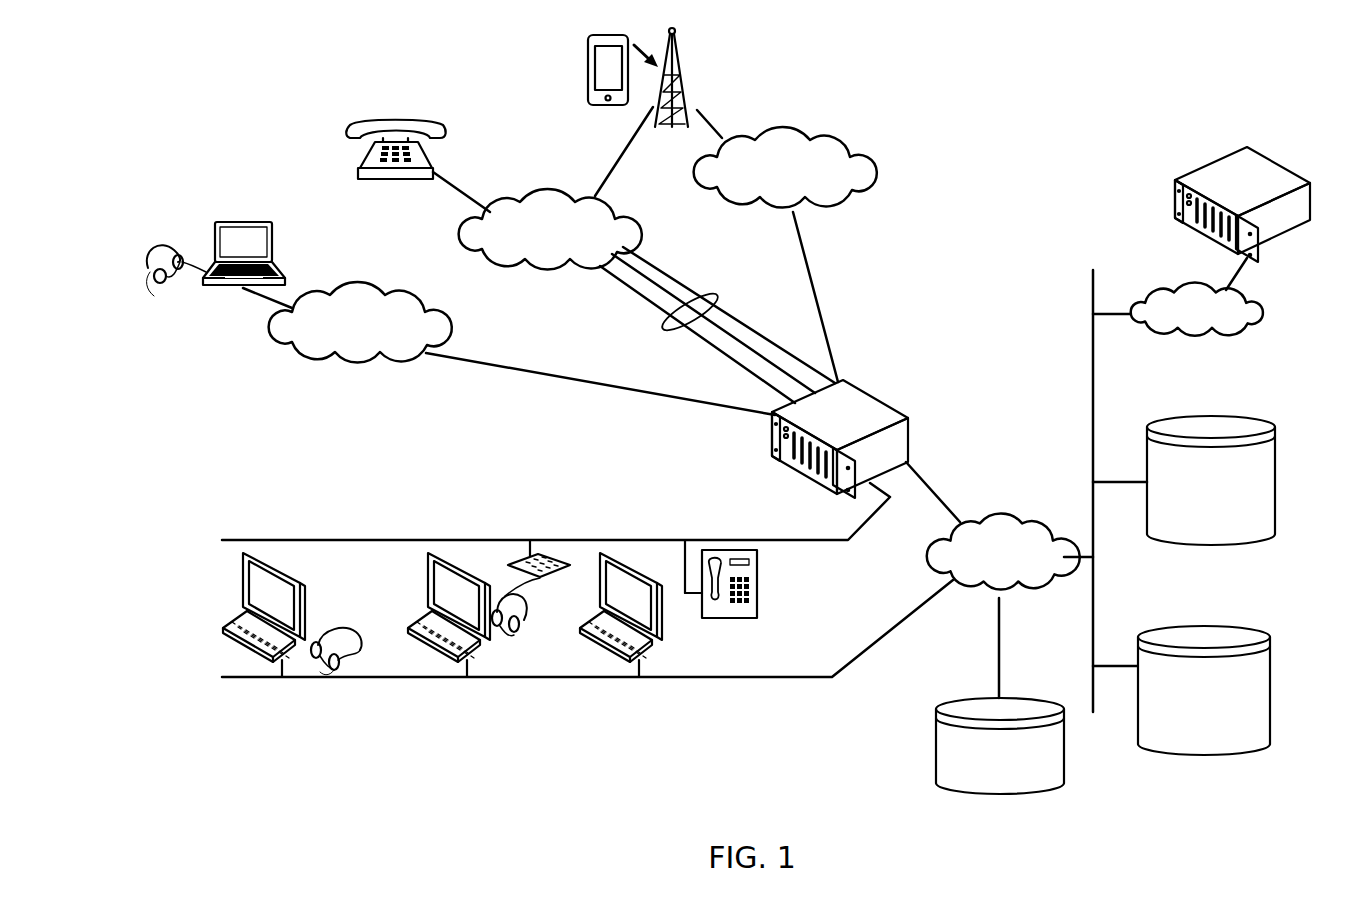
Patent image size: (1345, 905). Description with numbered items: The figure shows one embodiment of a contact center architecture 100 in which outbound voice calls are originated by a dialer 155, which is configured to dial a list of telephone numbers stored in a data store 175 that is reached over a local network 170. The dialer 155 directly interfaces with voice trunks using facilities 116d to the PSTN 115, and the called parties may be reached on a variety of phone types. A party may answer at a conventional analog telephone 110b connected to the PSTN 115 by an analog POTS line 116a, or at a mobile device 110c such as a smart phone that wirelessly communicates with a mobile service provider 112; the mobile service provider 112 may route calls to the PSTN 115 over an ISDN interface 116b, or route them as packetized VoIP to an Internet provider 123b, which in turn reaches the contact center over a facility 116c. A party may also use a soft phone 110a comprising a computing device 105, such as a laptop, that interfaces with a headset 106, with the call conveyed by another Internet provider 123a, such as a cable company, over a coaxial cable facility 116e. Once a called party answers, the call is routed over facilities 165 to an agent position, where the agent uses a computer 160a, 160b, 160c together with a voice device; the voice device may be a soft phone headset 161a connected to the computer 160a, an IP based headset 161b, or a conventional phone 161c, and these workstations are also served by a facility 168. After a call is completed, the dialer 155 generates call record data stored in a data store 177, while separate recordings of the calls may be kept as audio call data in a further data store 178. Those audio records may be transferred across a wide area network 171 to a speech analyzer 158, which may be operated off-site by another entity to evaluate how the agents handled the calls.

The contact center architecture 100 is at (1006, 156).
The computing device 105 is at (213, 251).
The headset 106 is at (157, 282).
The soft phone 110a is at (250, 198).
The conventional analog telephone 110b is at (433, 160).
The mobile device 110c is at (587, 74).
The mobile service provider 112 is at (680, 92).
The PSTN 115 is at (532, 251).
The POTS line 116a is at (463, 193).
The ISDN interface 116b is at (633, 135).
The facility 116c is at (815, 293).
The facilities 116d is at (672, 320).
The facility 116e is at (542, 373).
The Internet provider 123a is at (338, 346).
The Internet provider 123b is at (761, 191).
The dialer 155 is at (824, 444).
The speech analyzer 158 is at (1293, 171).
The computer 160a is at (303, 602).
The computer 160b is at (487, 588).
The computer 160c is at (657, 608).
The headset 161a is at (340, 647).
The IP based headset 161b is at (515, 617).
The conventional phone 161c is at (742, 622).
The facilities 165 is at (792, 540).
The facility to workstations 168 is at (798, 678).
The local network 170 is at (940, 580).
The wide area network 171 is at (1178, 290).
The data store 175 is at (986, 776).
The data store 177 is at (1197, 513).
The data store 178 is at (1190, 730).